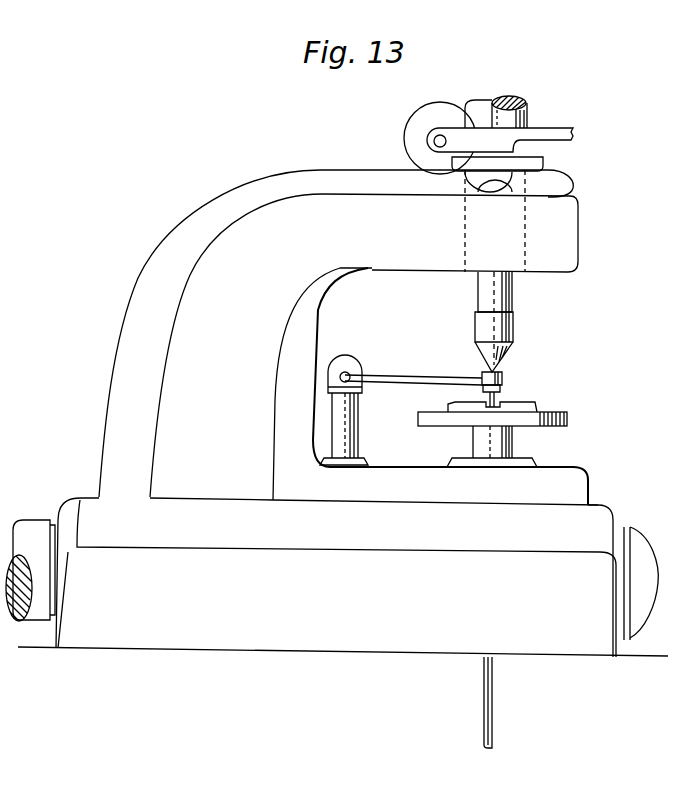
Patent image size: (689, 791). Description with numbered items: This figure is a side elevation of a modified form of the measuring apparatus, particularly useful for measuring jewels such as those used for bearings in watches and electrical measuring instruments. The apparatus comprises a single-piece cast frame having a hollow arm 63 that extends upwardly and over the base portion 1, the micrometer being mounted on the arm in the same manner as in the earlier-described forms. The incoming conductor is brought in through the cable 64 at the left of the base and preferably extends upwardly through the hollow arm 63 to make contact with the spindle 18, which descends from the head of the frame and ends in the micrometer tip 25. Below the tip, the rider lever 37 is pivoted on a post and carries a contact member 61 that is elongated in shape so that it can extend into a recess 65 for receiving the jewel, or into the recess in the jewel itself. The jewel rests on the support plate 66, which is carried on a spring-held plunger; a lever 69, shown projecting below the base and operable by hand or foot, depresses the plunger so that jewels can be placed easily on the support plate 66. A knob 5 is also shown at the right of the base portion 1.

The base portion 1 is at (263, 640).
The adjusting knob 5 is at (655, 600).
The spindle 18 is at (510, 298).
The micrometer tip 25 is at (505, 352).
The rider lever 37 is at (410, 377).
The contact member 61 is at (500, 394).
The hollow arm 63 is at (343, 337).
The cable 64 is at (31, 524).
The recess 65 is at (482, 397).
The support plate 66 is at (568, 420).
The lever 69 is at (494, 712).